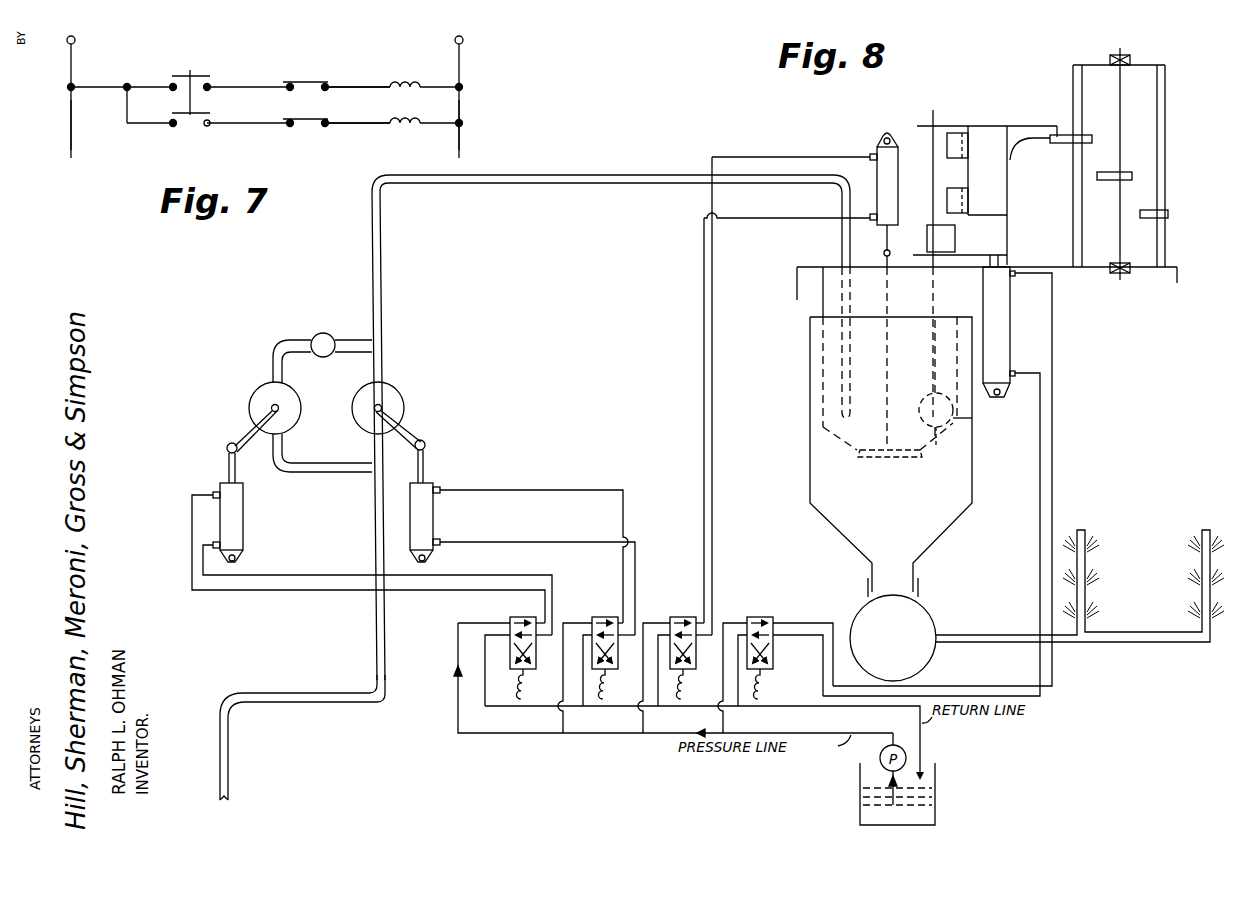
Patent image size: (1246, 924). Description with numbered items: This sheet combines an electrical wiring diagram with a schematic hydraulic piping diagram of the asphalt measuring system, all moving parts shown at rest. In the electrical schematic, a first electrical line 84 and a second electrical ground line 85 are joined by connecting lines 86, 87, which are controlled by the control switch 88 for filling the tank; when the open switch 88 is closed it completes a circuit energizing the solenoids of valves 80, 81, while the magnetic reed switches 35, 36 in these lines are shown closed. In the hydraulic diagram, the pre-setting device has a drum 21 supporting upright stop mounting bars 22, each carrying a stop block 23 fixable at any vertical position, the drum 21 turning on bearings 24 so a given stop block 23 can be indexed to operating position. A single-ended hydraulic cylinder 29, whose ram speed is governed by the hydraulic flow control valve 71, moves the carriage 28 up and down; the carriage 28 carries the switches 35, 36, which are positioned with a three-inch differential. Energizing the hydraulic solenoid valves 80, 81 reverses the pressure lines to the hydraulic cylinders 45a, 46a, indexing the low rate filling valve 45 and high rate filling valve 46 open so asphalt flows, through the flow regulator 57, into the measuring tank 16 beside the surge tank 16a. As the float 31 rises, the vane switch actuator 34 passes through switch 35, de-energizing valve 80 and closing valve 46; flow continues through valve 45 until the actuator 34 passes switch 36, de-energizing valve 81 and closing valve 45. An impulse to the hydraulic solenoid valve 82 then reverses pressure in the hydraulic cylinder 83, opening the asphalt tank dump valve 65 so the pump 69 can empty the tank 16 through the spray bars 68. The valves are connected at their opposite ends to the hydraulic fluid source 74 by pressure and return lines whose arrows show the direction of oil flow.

In FIG. 7, the first electrical line 84 is at (73, 125).
In FIG. 7, the second electrical ground line 85 is at (462, 138).
In FIG. 7, the control switch 88 is at (200, 73).
In FIG. 7, the magnetic reed switch 35 is at (303, 82).
In FIG. 8, the magnetic reed switch 35 is at (952, 209).
In FIG. 7, the magnetic reed switch 36 is at (306, 124).
In FIG. 8, the magnetic reed switch 36 is at (958, 132).
In FIG. 7, the connecting line 87 is at (356, 84).
In FIG. 7, the connecting line 86 is at (361, 125).
In FIG. 7, the hydraulic solenoid valve 80 is at (410, 83).
In FIG. 8, the hydraulic solenoid valve 80 is at (613, 621).
In FIG. 7, the hydraulic solenoid valve 81 is at (415, 127).
In FIG. 8, the hydraulic solenoid valve 81 is at (527, 618).
In FIG. 8, the hydraulic solenoid valve 82 is at (688, 620).
In FIG. 8, the hydraulic flow control valve 71 is at (767, 620).
In FIG. 8, the hydraulic cylinder 83 is at (903, 113).
In FIG. 8, the carriage 28 is at (1055, 125).
In FIG. 8, the vane switch actuator 34 is at (929, 245).
In FIG. 8, the drum 21 is at (1139, 160).
In FIG. 8, the stop mounting bar 22 is at (1160, 158).
In FIG. 8, the stop block 23 is at (1088, 134).
In FIG. 8, the bearing 24 is at (1118, 45).
In FIG. 8, the single-ended hydraulic cylinder 29 is at (1000, 345).
In FIG. 8, the measuring tank 16 is at (977, 417).
In FIG. 8, the surge tank 16a is at (946, 525).
In FIG. 8, the float 31 is at (941, 440).
In FIG. 8, the asphalt tank dump valve 65 is at (886, 462).
In FIG. 8, the spray bar 68 is at (1205, 597).
In FIG. 8, the pump 69 is at (937, 658).
In FIG. 8, the hydraulic fluid source 74 is at (868, 812).
In FIG. 8, the flow regulator 57 is at (330, 333).
In FIG. 8, the low rate filling valve 45 is at (250, 406).
In FIG. 8, the high rate filling valve 46 is at (406, 403).
In FIG. 8, the hydraulic cylinder 45a is at (246, 528).
In FIG. 8, the hydraulic cylinder 46a is at (432, 525).